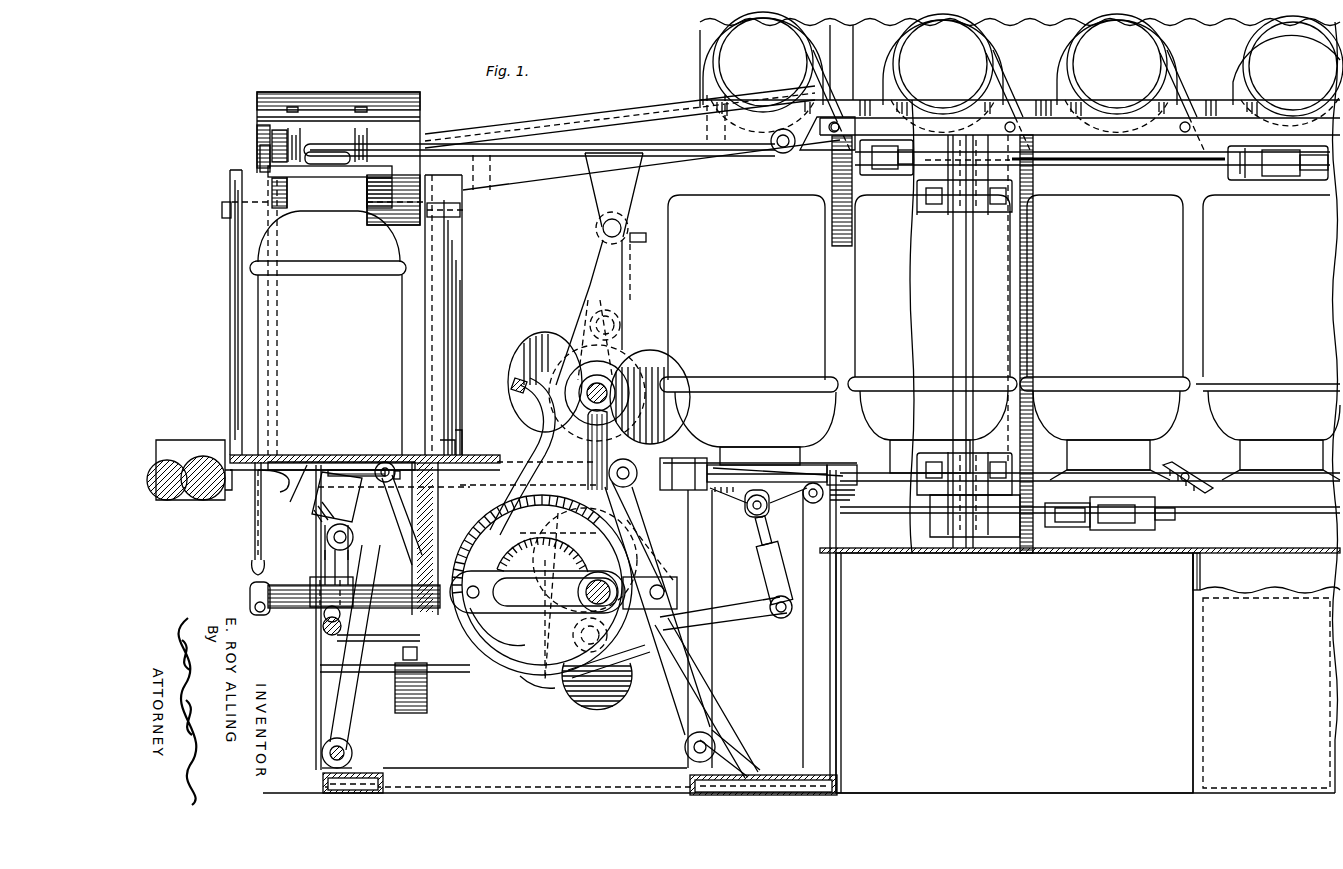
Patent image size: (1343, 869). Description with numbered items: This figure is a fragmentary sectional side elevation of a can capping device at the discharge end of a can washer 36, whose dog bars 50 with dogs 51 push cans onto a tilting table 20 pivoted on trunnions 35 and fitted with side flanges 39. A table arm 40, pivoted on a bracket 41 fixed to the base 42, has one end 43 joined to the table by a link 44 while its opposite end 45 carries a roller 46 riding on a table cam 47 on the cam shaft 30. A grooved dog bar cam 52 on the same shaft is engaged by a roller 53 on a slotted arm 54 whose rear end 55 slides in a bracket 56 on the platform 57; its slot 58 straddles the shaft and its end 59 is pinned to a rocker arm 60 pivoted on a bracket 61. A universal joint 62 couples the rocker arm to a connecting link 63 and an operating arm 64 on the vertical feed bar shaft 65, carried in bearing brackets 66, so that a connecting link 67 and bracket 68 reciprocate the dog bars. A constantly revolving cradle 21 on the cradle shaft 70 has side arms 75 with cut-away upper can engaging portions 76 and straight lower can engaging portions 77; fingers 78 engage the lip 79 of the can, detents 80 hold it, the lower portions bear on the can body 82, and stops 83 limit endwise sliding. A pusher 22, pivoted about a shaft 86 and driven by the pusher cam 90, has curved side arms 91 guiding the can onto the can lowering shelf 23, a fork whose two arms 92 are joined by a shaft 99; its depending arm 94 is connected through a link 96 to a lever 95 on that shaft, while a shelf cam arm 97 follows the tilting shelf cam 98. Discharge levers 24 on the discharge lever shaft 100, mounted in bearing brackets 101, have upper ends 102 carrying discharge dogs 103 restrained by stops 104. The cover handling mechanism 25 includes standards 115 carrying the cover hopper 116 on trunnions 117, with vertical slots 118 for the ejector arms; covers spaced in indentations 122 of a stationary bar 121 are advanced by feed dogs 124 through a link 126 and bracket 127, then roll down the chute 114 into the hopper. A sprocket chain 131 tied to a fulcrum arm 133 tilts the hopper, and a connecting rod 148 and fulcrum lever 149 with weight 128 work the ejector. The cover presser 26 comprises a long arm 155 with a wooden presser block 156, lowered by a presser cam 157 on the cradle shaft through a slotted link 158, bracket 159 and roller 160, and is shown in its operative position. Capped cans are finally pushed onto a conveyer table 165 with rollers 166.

The tilting table 20 is at (820, 463).
The cradle 21 is at (583, 290).
The pusher 22 is at (527, 455).
The can lowering shelf 23 is at (287, 478).
The discharge levers 24 is at (347, 713).
The cover handling mechanism 25 is at (250, 140).
The cover presser 26 is at (402, 140).
The cam shaft 30 is at (622, 572).
The trunnions 35 is at (808, 500).
The can washer 36 is at (1190, 570).
The side flanges 39 is at (797, 460).
The table arm 40 is at (710, 663).
The bracket 41 is at (722, 730).
The base 42 is at (773, 773).
The end of table arm 43 is at (752, 612).
The link 44 is at (770, 550).
The opposite end of table arm 45 is at (627, 683).
The roller 46 is at (586, 642).
The table cam 47 is at (585, 560).
The dog bars 50 is at (1267, 490).
The dogs 51 is at (1203, 485).
The dog bar cam 52 is at (530, 677).
The roller 53 is at (508, 622).
The reciprocating slotted arm 54 is at (522, 641).
The rear end of slotted arm 55 is at (310, 612).
The bracket 56 is at (453, 487).
The platform 57 is at (292, 458).
The slot 58 is at (553, 577).
The end of slotted arm 59 is at (677, 585).
The rocker arm 60 is at (683, 717).
The bracket 61 is at (687, 757).
The universal joint 62 is at (678, 458).
The connecting link 63 is at (770, 460).
The operating arm 64 is at (960, 518).
The feed bar shaft 65 is at (957, 317).
The bearing brackets 66 is at (983, 460).
The connecting link 67 is at (1040, 520).
The bracket 68 is at (1140, 523).
The cradle shaft 70 is at (607, 390).
The side arms 75 is at (557, 370).
The upper can engaging portions 76 is at (585, 477).
The lower can engaging portions 77 is at (597, 260).
The finger 78 is at (660, 547).
The lip 79 is at (345, 182).
The detent 80 is at (650, 515).
The body 82 is at (680, 277).
The stop 83 is at (637, 240).
The shaft 86 is at (470, 547).
The pusher cam 90 is at (585, 702).
The side arms 91 is at (513, 387).
The arms 92 is at (300, 490).
The downwardly extending arm 94 is at (327, 525).
The lever 95 is at (407, 550).
The link 96 is at (325, 564).
The shelf cam arm 97 is at (547, 653).
The tilting shelf cam 98 is at (583, 533).
The shaft 99 is at (455, 433).
The discharge lever shaft 100 is at (352, 748).
The bearing brackets 101 is at (358, 758).
The upper ends 102 is at (392, 482).
The discharge dog 103 is at (384, 458).
The stop 104 is at (383, 517).
The cover guide or chute 114 is at (593, 110).
The standards 115 is at (455, 287).
The cover hopper 116 is at (257, 100).
The trunnions 117 is at (461, 208).
The vertical slots 118 is at (372, 130).
The stationary bar 121 is at (1040, 107).
The indentations 122 is at (1262, 113).
The feed dogs 124 is at (1173, 76).
The link 126 is at (1147, 158).
The bracket 127 is at (1290, 163).
The weight 128 is at (403, 690).
The sprocket chain 131 is at (255, 533).
The fulcrum arm 133 is at (297, 580).
The connecting rod 148 is at (337, 458).
The fulcrum lever 149 is at (407, 641).
The arm 155 is at (692, 143).
The presser block 156 is at (318, 179).
The presser cam 157 is at (533, 347).
The slotted link 158 is at (583, 307).
The bracket 159 is at (598, 197).
The roller 160 is at (623, 320).
The conveyer table 165 is at (220, 505).
The rollers 166 is at (182, 497).